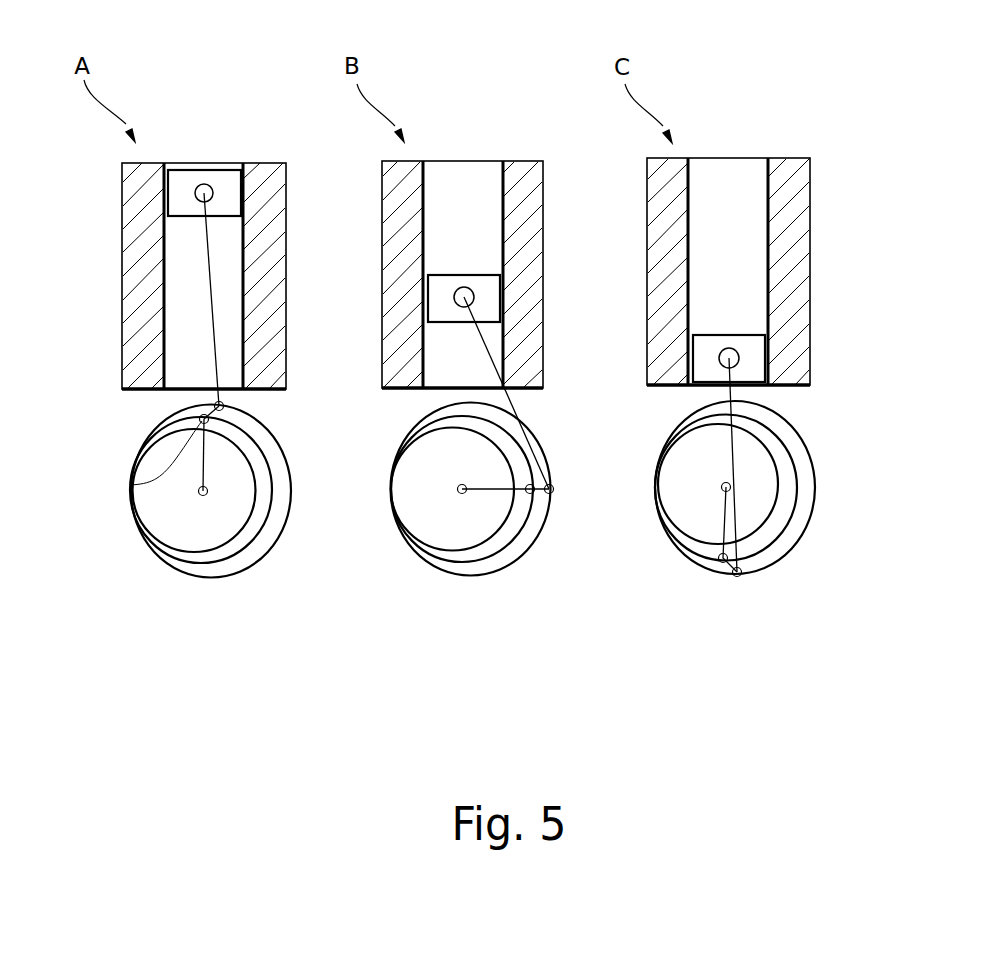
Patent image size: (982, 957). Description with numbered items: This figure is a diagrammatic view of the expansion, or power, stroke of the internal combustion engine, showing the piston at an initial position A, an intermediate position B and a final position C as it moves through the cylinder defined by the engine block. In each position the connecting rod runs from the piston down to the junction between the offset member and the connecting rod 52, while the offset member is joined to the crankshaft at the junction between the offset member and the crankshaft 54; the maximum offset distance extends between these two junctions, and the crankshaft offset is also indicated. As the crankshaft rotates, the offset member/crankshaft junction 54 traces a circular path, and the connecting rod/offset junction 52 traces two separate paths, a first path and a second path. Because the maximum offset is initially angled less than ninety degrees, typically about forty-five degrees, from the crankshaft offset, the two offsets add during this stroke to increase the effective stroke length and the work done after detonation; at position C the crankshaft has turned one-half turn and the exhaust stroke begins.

The junction between the offset member and the connecting rod 52 is at (214, 404).
The junction between the offset member and the crankshaft 54 is at (130, 485).